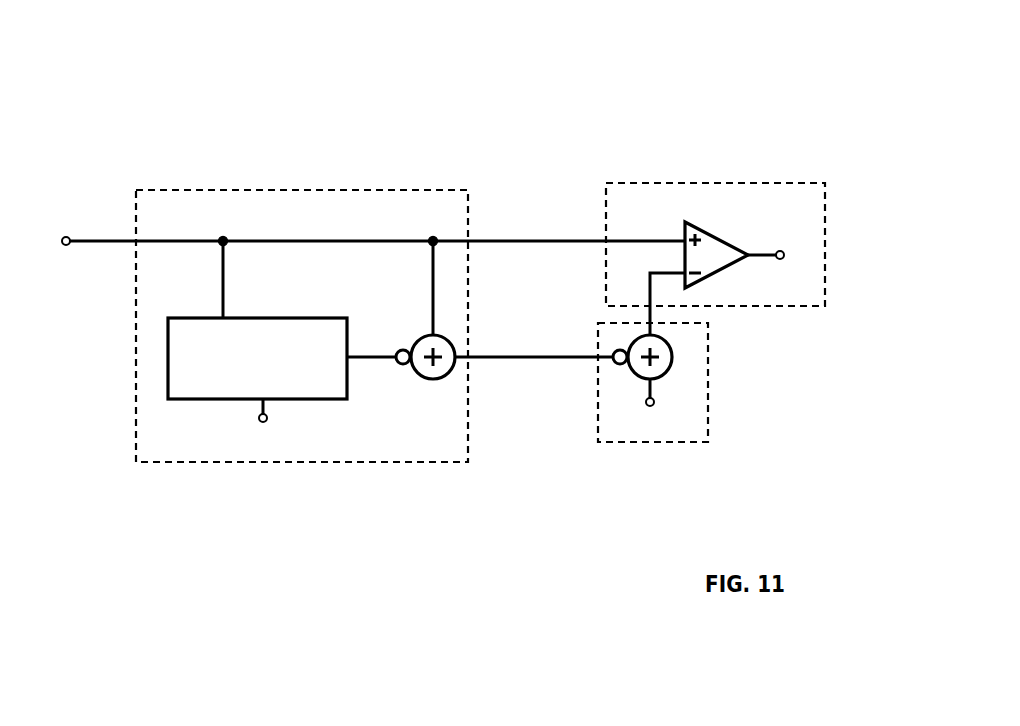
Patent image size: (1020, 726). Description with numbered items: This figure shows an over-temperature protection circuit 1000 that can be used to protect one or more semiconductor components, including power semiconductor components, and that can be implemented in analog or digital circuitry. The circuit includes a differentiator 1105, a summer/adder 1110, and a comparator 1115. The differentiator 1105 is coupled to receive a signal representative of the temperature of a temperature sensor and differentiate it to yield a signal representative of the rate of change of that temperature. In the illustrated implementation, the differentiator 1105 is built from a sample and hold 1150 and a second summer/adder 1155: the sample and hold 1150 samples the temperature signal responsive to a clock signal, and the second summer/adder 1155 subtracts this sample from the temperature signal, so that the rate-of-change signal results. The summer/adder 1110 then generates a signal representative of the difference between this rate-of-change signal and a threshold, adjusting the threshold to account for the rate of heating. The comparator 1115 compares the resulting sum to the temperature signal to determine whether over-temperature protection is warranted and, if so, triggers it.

The temperature sensing circuit 1000 is at (812, 73).
The differentiator 1105 is at (306, 190).
The summer/adder 1110 is at (655, 444).
The comparator 1115 is at (714, 183).
The sample and hold 1150 is at (181, 400).
The second summer/adder 1155 is at (427, 381).